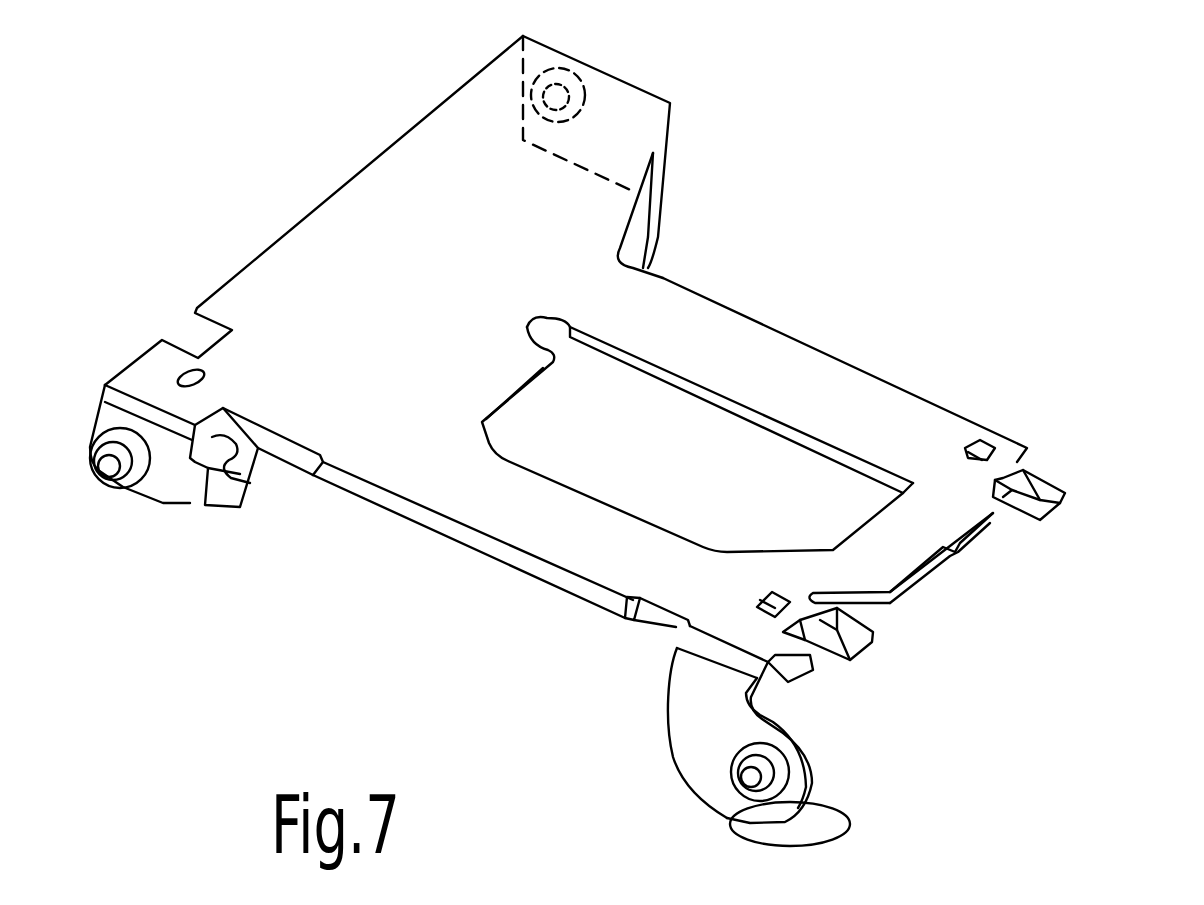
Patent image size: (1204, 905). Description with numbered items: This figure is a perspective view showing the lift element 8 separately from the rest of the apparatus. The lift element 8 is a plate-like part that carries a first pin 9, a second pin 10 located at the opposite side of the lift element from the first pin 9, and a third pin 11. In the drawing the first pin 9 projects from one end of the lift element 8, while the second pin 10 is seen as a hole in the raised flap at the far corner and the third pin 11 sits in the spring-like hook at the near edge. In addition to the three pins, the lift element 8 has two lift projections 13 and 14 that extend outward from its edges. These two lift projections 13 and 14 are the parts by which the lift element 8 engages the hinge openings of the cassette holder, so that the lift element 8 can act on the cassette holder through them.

The lift element 8 is at (882, 412).
The first pin 9 is at (110, 472).
The second pin 10 is at (553, 103).
The third pin 11 is at (747, 782).
The lift projection 13 is at (1053, 487).
The lift projection 14 is at (853, 632).